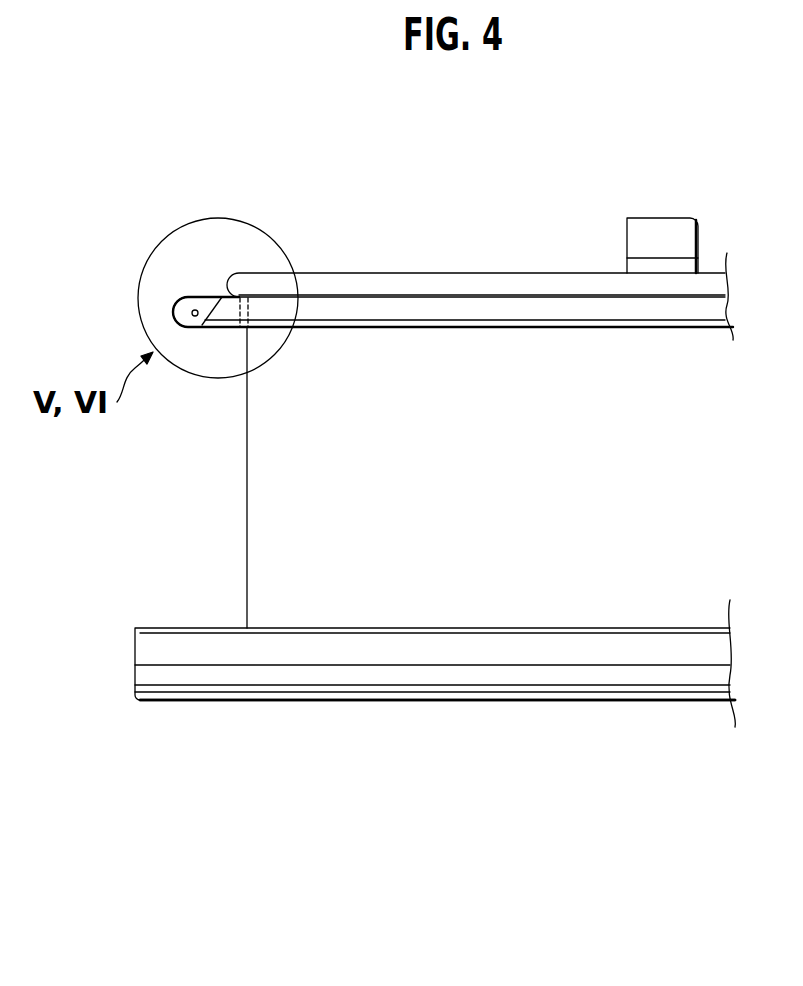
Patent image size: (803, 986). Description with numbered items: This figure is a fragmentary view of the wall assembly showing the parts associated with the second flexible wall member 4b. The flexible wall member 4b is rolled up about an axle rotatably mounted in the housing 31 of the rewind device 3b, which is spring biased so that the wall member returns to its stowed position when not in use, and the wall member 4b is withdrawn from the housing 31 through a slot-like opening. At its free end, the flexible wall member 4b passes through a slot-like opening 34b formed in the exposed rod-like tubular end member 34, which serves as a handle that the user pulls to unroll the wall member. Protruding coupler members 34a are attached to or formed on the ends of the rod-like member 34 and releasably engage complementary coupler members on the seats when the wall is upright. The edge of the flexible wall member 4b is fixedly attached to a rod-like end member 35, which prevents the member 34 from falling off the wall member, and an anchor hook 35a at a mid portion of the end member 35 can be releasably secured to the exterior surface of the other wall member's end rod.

The rewind device 3b is at (273, 705).
The housing 31 is at (470, 703).
The rod-like tubular end member 34 is at (397, 313).
The coupler member 34a is at (179, 304).
The slot-like opening 34b is at (249, 300).
The end member 35 is at (520, 285).
The anchor hook 35a is at (662, 230).
The flexible wall member 4b is at (270, 520).